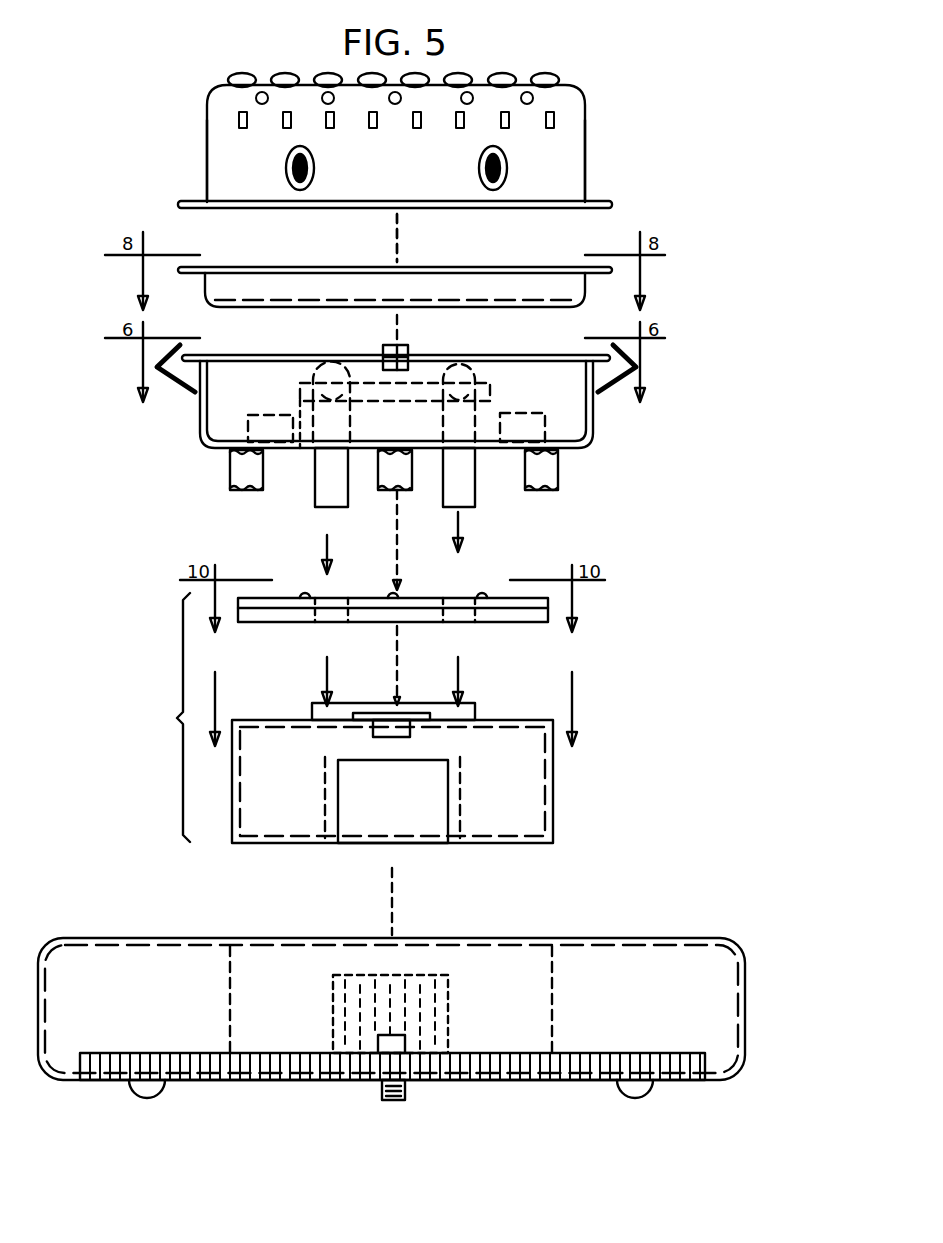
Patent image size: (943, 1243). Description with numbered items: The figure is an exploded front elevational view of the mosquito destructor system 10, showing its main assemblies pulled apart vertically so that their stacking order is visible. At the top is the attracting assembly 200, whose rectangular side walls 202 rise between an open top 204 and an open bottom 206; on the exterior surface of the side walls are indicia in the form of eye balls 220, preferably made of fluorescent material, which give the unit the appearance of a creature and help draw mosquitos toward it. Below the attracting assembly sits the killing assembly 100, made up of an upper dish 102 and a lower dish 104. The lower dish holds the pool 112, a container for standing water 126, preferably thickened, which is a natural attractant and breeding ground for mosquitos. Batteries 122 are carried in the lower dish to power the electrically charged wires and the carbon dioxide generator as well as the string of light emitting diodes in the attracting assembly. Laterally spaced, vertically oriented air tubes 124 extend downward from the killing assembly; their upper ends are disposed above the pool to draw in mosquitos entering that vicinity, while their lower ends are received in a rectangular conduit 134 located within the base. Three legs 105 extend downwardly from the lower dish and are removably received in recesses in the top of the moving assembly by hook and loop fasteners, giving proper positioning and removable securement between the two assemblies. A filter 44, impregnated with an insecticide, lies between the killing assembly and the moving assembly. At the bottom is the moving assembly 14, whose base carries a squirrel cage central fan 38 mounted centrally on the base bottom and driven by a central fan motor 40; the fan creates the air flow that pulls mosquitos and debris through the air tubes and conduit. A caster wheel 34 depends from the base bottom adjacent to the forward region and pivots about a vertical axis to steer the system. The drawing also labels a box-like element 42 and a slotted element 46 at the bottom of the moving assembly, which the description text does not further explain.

The mosquito destructor system 10 is at (116, 132).
The moving assembly 14 is at (170, 998).
The caster wheel 34 is at (390, 1102).
The squirrel cage central fan 38 is at (393, 975).
The central fan motor 40 is at (405, 1038).
The support box 42 is at (300, 778).
The filter 44 is at (418, 597).
The vent grille 46 is at (600, 1070).
The killing assembly 100 is at (757, 213).
The upper dish 102 is at (228, 270).
The lower dish 104 is at (590, 420).
The legs 105 is at (230, 465).
The pool 112 is at (305, 440).
The batteries 122 is at (250, 422).
The air tubes 124 is at (327, 487).
The standing water 126 is at (405, 405).
The rectangular conduit 134 is at (312, 710).
The attracting assembly 200 is at (690, 58).
The rectangular side walls 202 is at (207, 165).
The open top 204 is at (424, 86).
The open bottom 206 is at (387, 209).
The eye balls 220 is at (480, 172).